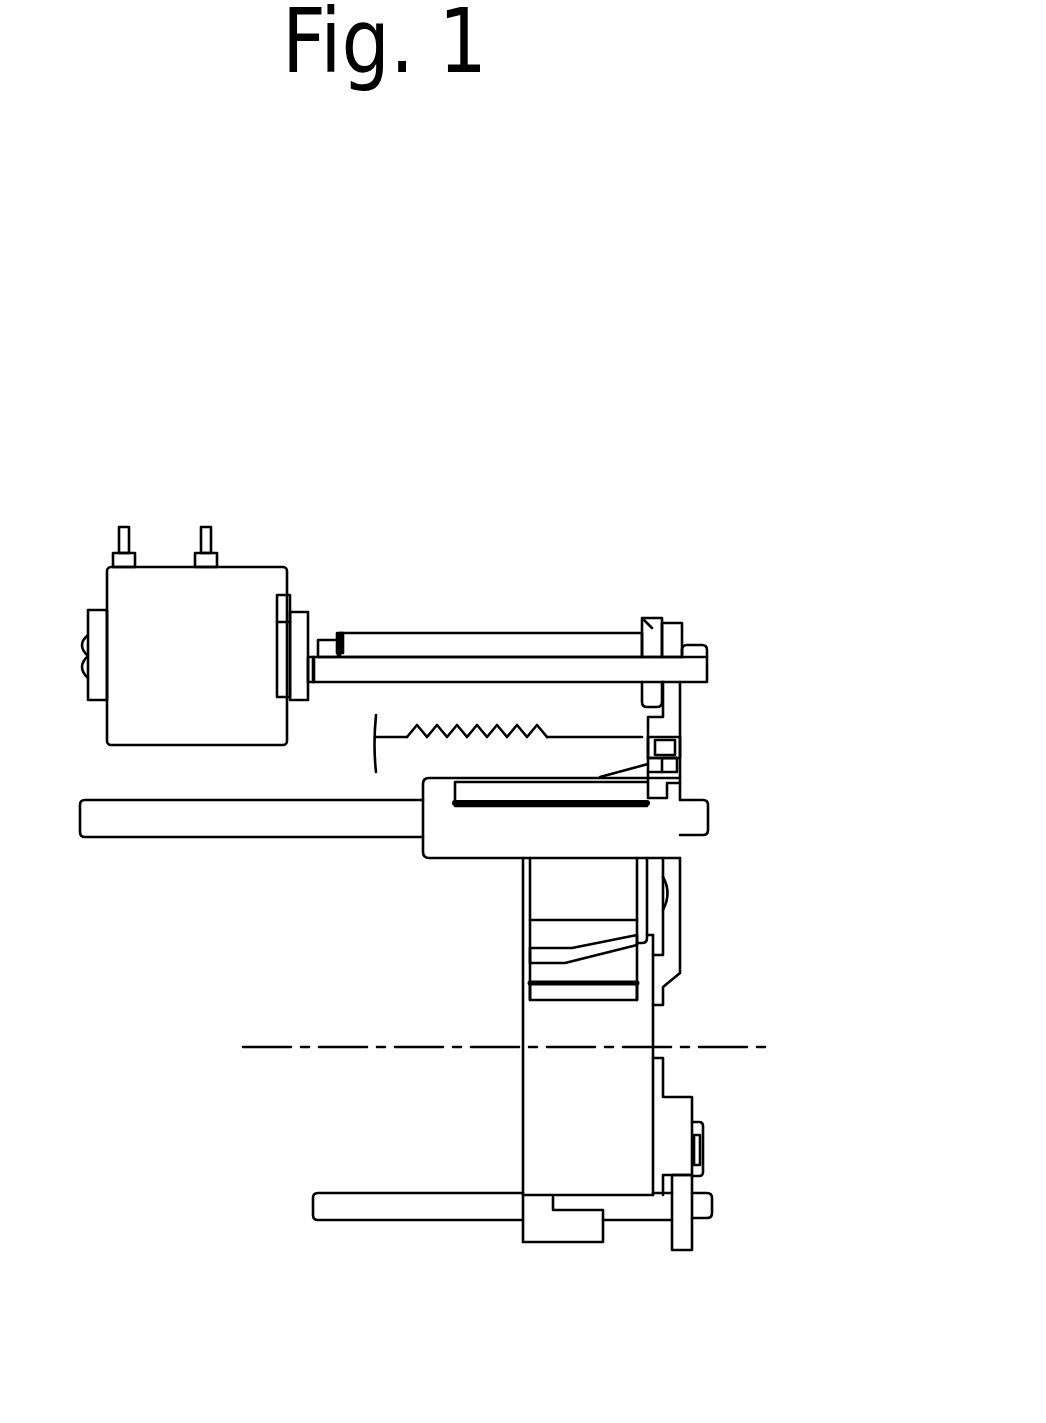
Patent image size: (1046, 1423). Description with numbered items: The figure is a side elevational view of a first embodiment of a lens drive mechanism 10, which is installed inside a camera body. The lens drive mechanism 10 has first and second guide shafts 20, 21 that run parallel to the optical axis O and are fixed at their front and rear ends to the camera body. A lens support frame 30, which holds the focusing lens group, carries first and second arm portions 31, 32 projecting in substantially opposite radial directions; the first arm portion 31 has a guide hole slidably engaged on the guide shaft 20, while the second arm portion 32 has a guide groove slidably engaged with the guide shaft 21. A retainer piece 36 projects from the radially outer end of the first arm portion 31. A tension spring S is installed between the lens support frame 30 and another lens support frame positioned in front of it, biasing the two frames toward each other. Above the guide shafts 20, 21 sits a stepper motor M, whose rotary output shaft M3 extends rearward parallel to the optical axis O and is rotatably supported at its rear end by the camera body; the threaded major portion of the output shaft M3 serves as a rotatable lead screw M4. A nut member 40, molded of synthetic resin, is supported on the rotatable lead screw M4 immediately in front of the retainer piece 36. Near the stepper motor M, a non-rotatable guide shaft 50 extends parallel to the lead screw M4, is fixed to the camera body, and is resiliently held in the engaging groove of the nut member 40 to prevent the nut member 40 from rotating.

The lens drive mechanism 10 is at (528, 466).
The stepper motor M is at (248, 590).
The rotary output shaft M3 is at (327, 640).
The rotatable lead screw M4 is at (535, 647).
The guide shaft 50 is at (583, 665).
The tension spring S is at (434, 728).
The nut member 40 is at (650, 620).
The retainer piece 36 is at (677, 633).
The first arm portion 31 is at (675, 713).
The first guide shaft 20 is at (120, 822).
The lens support frame 30 is at (553, 1126).
The second guide shaft 21 is at (363, 1203).
The second arm portion 32 is at (682, 1217).
The optical axis O is at (295, 1047).